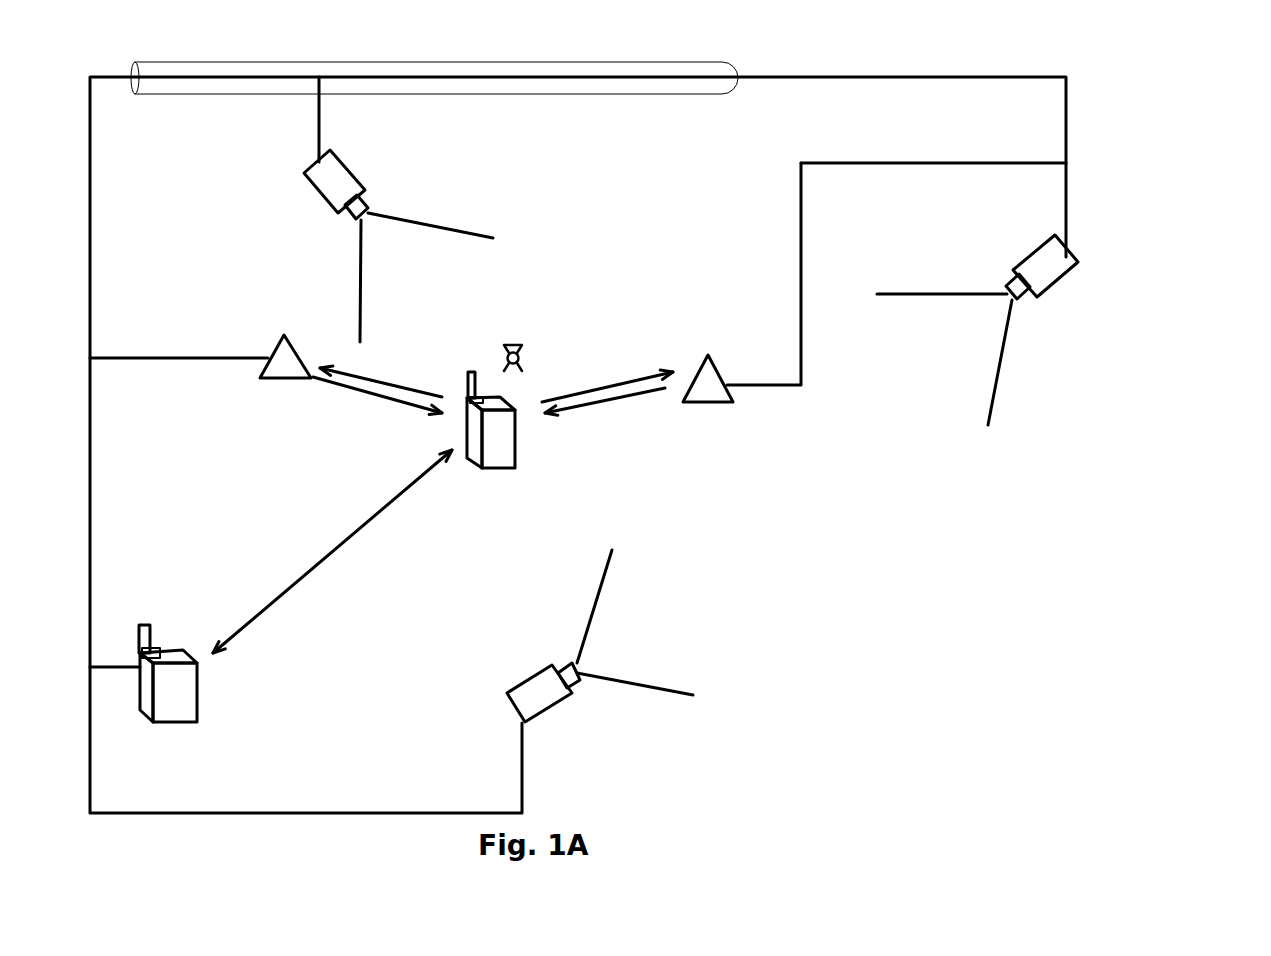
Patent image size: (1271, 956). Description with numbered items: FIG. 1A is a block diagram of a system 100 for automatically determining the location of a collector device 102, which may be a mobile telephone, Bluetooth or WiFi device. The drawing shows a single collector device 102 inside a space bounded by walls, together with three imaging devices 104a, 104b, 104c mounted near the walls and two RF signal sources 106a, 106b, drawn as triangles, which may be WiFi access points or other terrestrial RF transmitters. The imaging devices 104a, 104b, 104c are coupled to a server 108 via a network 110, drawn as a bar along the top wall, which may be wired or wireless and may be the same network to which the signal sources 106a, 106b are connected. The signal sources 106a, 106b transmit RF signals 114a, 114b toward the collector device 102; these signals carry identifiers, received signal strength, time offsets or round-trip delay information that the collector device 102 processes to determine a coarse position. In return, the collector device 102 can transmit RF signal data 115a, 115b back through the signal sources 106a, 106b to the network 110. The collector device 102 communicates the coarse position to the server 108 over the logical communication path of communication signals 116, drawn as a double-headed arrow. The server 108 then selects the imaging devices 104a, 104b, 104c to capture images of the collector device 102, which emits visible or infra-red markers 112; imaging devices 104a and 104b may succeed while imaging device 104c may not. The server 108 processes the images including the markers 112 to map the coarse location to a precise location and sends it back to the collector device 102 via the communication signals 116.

The system 100 is at (763, 570).
The collector device 102 is at (515, 397).
The imaging device 104a is at (340, 153).
The imaging device 104b is at (1073, 255).
The imaging device 104c is at (540, 715).
The RF signal source 106a is at (260, 375).
The RF signal source 106b is at (735, 403).
The server 108 is at (198, 693).
The network 110 is at (652, 60).
The markers 112 is at (508, 352).
The RF signal 114a is at (360, 390).
The RF signal 114b is at (590, 407).
The RF signal data 115a is at (368, 378).
The RF signal data 115b is at (623, 380).
The communication signals 116 is at (370, 527).